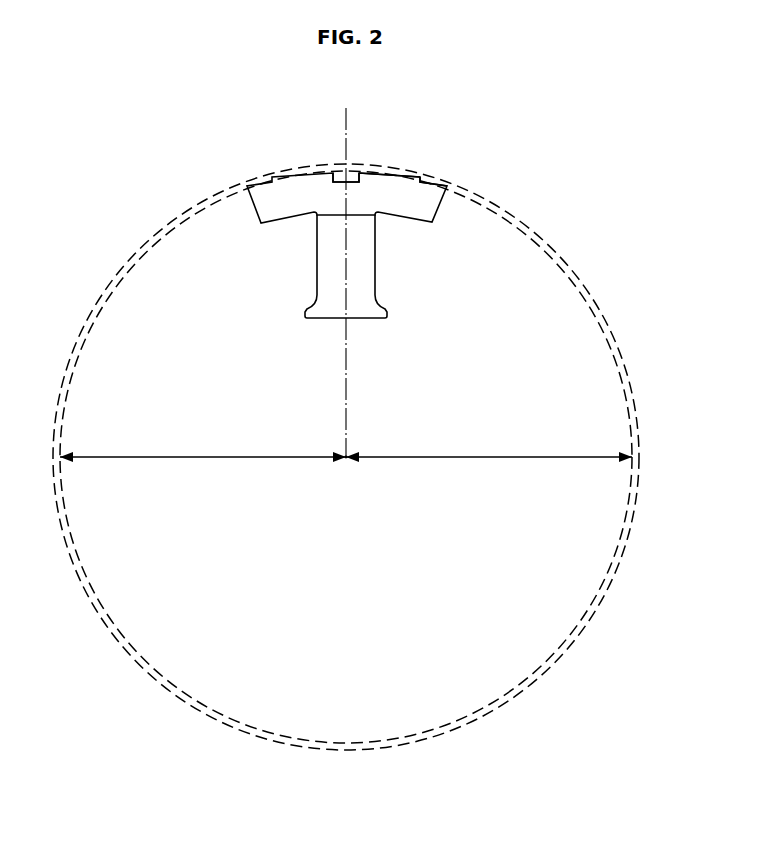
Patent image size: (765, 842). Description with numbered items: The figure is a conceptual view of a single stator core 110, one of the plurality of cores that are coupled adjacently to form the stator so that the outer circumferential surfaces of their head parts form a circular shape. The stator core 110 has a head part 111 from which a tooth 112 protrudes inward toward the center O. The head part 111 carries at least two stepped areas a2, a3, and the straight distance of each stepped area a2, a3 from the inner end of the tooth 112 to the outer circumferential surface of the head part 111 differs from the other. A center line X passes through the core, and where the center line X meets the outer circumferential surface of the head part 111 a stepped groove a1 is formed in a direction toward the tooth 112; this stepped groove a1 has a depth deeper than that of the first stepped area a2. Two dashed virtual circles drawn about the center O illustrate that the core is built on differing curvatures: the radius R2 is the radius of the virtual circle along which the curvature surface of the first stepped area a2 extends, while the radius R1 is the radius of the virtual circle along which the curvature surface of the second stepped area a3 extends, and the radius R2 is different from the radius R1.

The stator core 110 is at (457, 245).
The head part 111 is at (427, 204).
The tooth 112 is at (370, 282).
The stepped groove a1 is at (337, 176).
The first stepped area a2 is at (383, 177).
The second stepped area a3 is at (438, 179).
The center line X is at (346, 271).
The center O is at (345, 463).
The radius of virtual circle R1 is at (489, 446).
The radius of virtual circle R2 is at (203, 446).